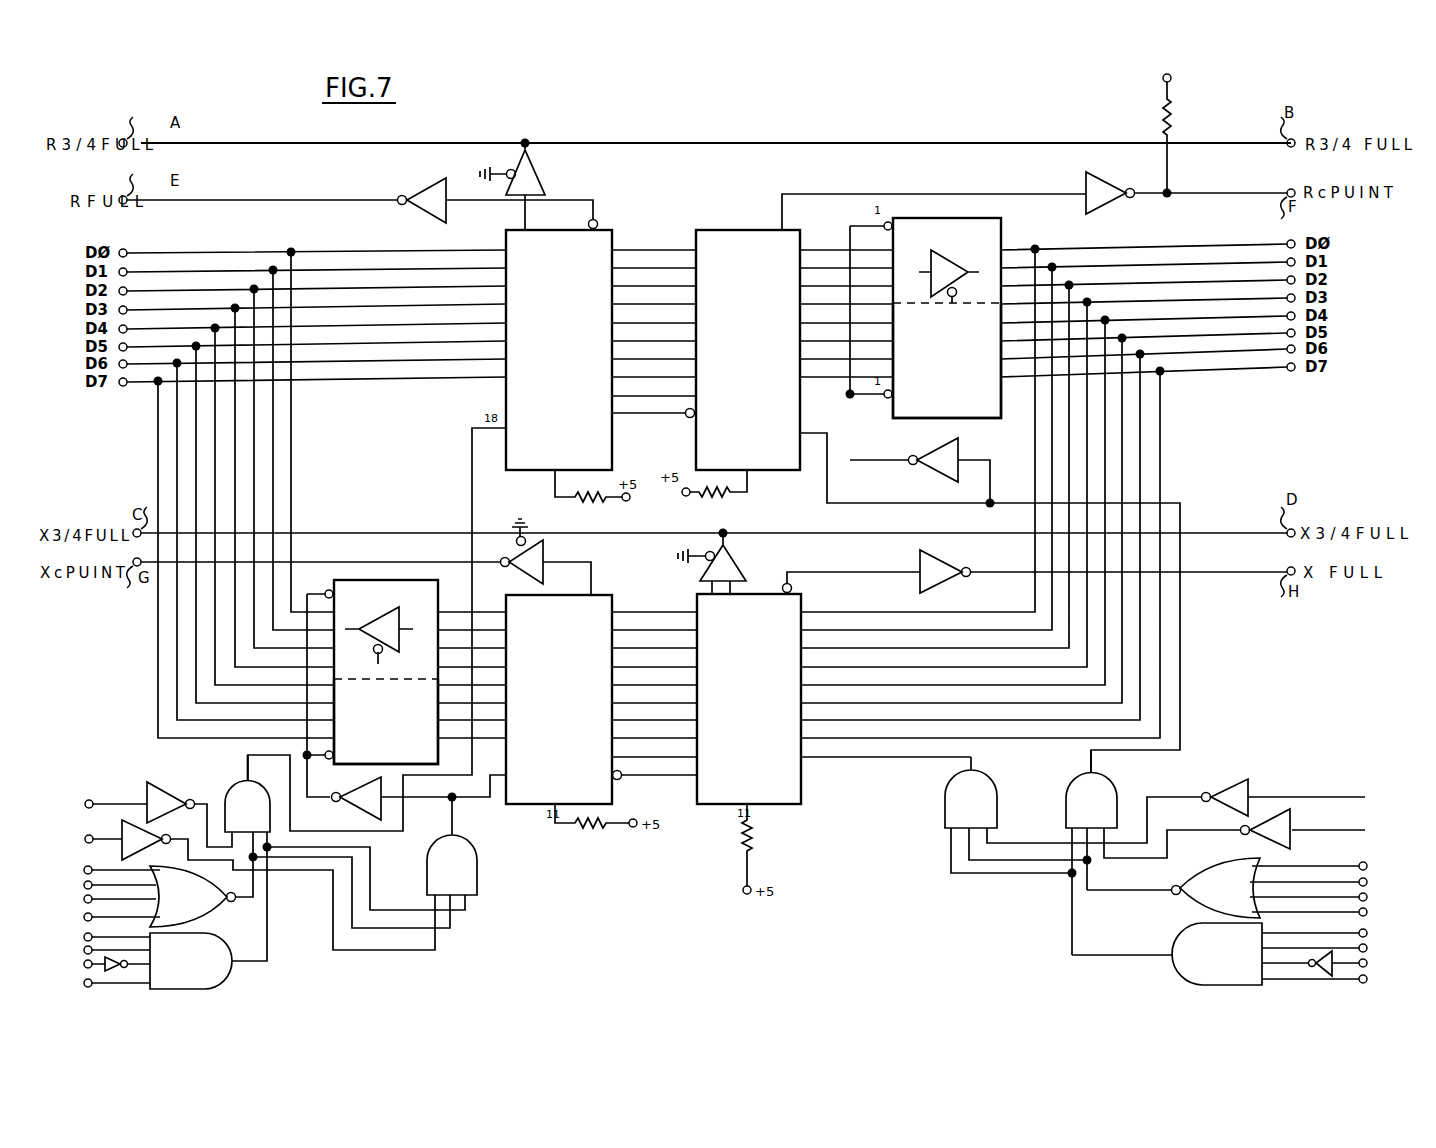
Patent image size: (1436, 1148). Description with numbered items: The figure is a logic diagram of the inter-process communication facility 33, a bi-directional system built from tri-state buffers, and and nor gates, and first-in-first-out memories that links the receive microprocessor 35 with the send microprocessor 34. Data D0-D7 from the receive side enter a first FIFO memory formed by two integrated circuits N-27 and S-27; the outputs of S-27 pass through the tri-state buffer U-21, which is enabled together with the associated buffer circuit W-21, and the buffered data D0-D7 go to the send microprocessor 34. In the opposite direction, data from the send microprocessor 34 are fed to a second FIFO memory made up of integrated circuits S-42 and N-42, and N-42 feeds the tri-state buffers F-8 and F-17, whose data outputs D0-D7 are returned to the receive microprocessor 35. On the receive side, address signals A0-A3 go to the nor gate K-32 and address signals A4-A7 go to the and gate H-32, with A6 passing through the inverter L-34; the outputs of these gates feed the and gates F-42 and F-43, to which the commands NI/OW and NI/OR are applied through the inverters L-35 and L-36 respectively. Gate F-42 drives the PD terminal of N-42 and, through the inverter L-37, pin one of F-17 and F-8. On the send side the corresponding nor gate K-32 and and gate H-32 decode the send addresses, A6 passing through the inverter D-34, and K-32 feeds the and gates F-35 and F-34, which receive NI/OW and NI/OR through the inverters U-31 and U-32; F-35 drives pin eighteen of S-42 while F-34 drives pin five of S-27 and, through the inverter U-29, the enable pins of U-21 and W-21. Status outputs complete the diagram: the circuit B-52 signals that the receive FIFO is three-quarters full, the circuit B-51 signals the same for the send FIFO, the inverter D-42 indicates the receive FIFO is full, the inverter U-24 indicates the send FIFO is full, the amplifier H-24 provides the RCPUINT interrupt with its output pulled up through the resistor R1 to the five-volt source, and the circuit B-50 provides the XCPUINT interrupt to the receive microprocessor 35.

The inter-process communication facility 33 is at (716, 103).
The send microprocessor 34 is at (1308, 823).
The receive microprocessor 35 is at (99, 829).
The integrated circuit N27 N-27 is at (558, 350).
The integrated circuit S27 S-27 is at (881, 332).
The integrated circuit N42 N-42 is at (562, 690).
The integrated circuit S42 S-42 is at (824, 688).
The integrated circuit W21 W-21 is at (943, 318).
The tri-state buffer U21 U-21 is at (947, 360).
The tri-state buffer F8 F-8 is at (380, 686).
The tri-state buffer F17 F-17 is at (386, 721).
The inverter D42 D-42 is at (430, 197).
The integrated circuit B52 B-52 is at (535, 193).
The amplifier H24 H-24 is at (1092, 180).
The resistor R1 is at (1170, 112).
The integrated circuit B50 B-50 is at (526, 536).
The integrated circuit B51 B-51 is at (726, 574).
The inverter U24 U-24 is at (952, 564).
The inverter U29 U-29 is at (963, 452).
The inverter L35 L-35 is at (166, 794).
The inverter L36 L-36 is at (142, 820).
The inverter L37 L-37 is at (368, 824).
The inverter L34 L-34 is at (124, 956).
The and gate F42 F-42 is at (227, 798).
The and gate F43 F-43 is at (472, 870).
The and gate F35 F-35 is at (942, 798).
The and gate F34 F-34 is at (1142, 788).
The nor gate K32 K-32 is at (745, 880).
The and gate H32 H-32 is at (745, 910).
The inverter U31 U-31 is at (1233, 784).
The inverter U32 U-32 is at (1290, 808).
The inverter D34 D-34 is at (1332, 953).